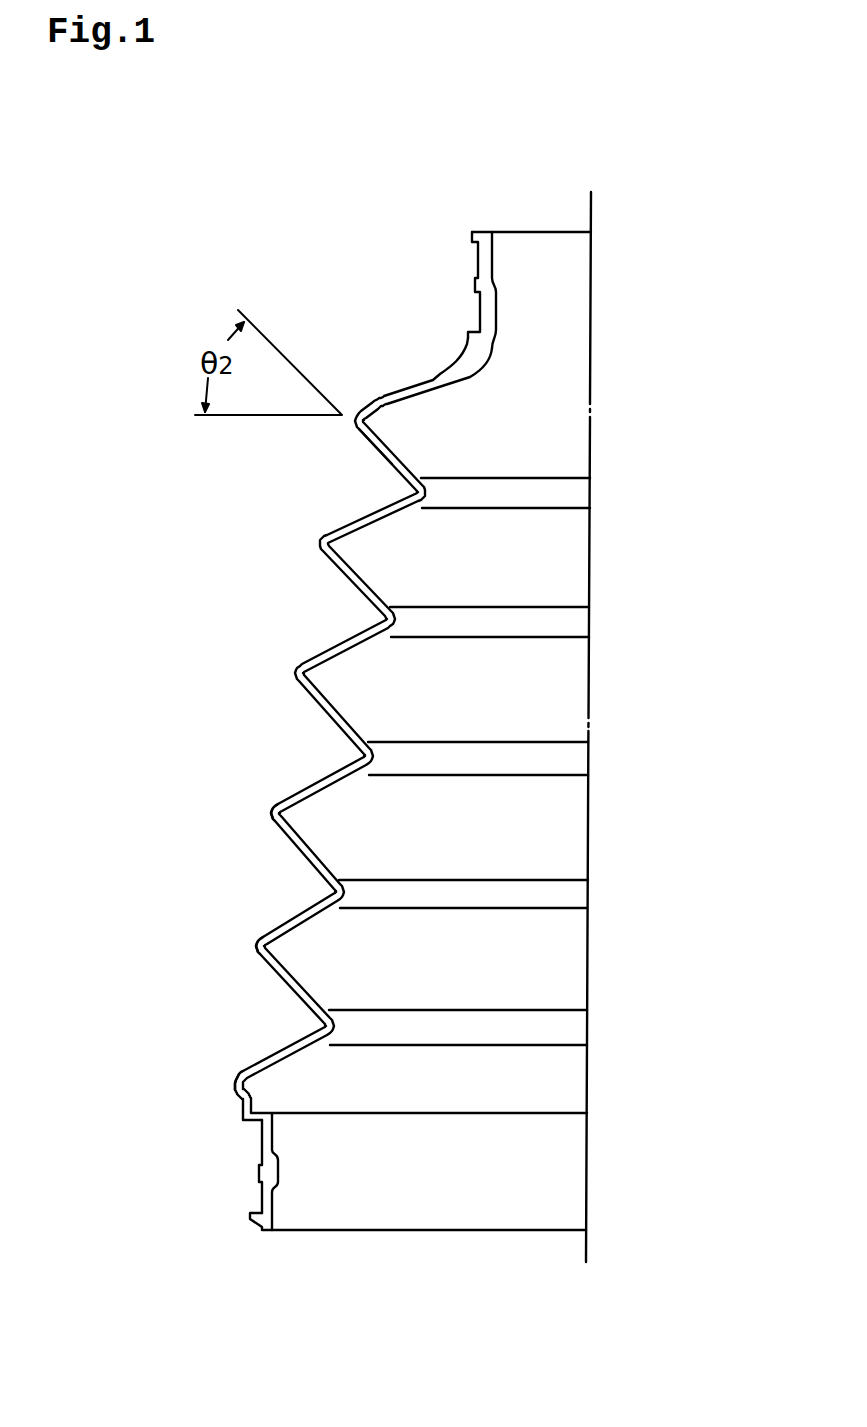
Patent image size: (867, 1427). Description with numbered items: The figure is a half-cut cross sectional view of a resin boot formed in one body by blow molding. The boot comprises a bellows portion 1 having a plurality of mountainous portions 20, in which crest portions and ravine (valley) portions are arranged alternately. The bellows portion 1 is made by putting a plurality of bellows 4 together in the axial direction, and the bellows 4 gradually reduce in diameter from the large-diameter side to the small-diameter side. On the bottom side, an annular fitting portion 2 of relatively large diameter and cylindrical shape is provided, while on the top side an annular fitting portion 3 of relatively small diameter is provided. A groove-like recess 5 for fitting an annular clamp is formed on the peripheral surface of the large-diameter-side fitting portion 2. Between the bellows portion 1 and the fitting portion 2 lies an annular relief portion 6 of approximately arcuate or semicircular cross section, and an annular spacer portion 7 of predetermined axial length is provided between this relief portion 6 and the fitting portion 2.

The bellows portion 1 is at (287, 670).
The annular fitting portion of large diameter 2 is at (260, 1222).
The annular fitting portion of small diameter 3 is at (490, 240).
The bellows 4 is at (392, 452).
The groove-like recess 5 is at (247, 1153).
The annular relief portion 6 is at (232, 1077).
The annular spacer portion 7 is at (243, 1102).
The mountainous portions 20 is at (257, 812).